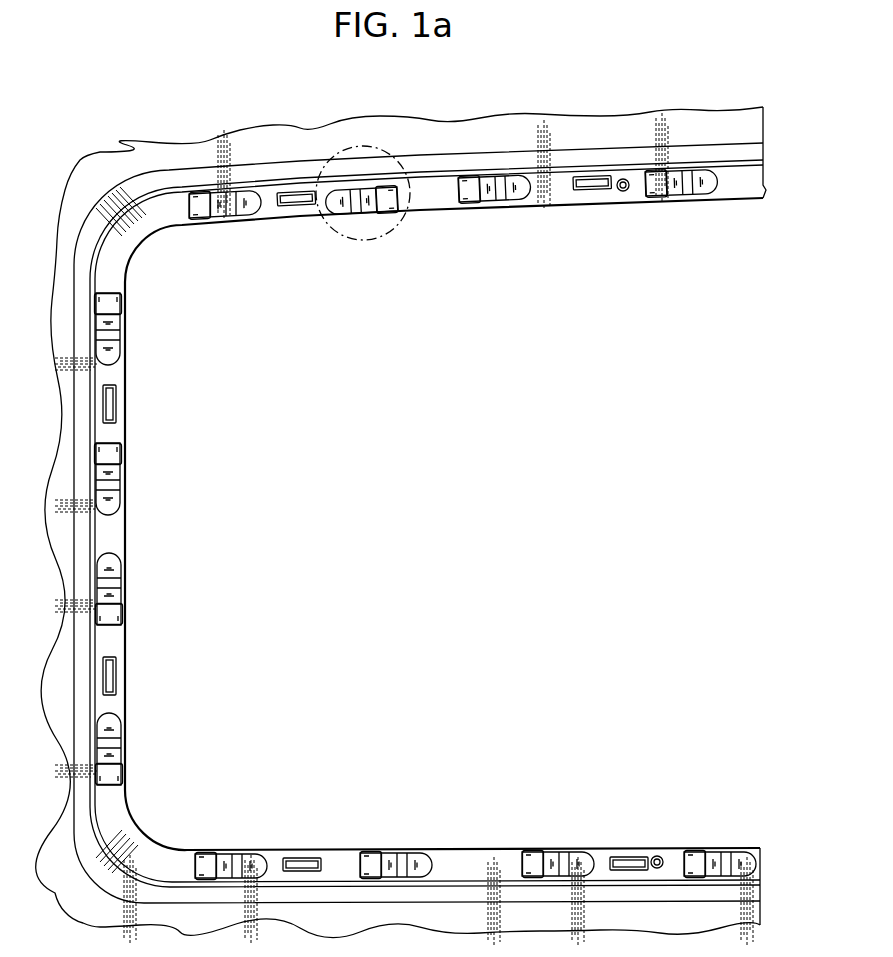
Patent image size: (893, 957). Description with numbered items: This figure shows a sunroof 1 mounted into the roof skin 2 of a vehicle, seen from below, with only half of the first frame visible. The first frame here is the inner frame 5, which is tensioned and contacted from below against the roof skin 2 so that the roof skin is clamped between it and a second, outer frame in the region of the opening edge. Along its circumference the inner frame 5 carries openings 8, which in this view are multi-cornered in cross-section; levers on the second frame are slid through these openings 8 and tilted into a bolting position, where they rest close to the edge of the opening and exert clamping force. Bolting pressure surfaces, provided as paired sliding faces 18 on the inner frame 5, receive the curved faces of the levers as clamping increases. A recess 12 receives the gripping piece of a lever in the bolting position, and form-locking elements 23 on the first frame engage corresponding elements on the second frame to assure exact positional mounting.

The sunroof 1 is at (552, 140).
The roof skin 2 is at (443, 130).
The inner frame 5 is at (107, 438).
The openings 8 is at (650, 185).
The recess 12 is at (247, 206).
The sliding faces 18 is at (105, 621).
The form-locking elements 23 is at (110, 400).